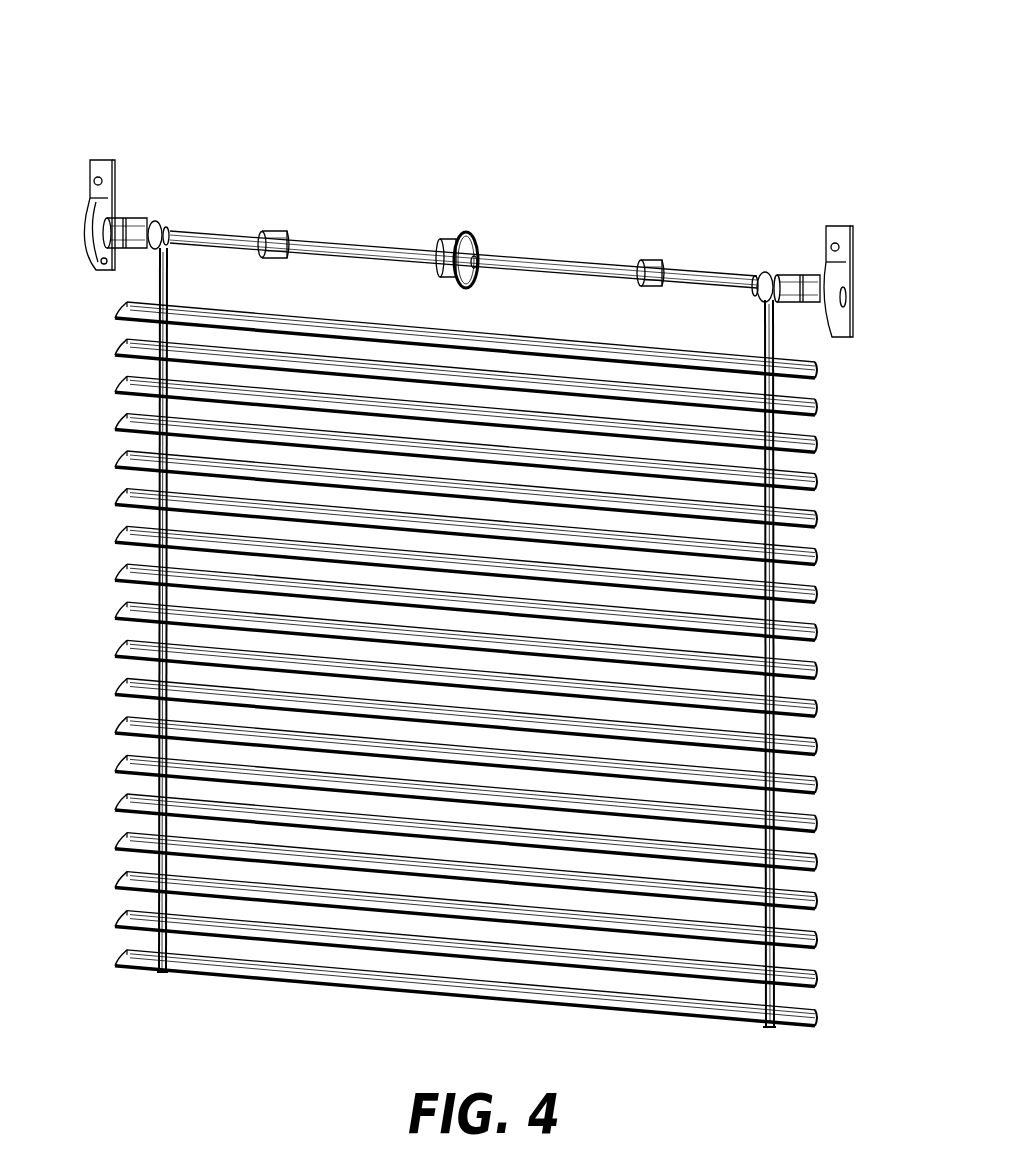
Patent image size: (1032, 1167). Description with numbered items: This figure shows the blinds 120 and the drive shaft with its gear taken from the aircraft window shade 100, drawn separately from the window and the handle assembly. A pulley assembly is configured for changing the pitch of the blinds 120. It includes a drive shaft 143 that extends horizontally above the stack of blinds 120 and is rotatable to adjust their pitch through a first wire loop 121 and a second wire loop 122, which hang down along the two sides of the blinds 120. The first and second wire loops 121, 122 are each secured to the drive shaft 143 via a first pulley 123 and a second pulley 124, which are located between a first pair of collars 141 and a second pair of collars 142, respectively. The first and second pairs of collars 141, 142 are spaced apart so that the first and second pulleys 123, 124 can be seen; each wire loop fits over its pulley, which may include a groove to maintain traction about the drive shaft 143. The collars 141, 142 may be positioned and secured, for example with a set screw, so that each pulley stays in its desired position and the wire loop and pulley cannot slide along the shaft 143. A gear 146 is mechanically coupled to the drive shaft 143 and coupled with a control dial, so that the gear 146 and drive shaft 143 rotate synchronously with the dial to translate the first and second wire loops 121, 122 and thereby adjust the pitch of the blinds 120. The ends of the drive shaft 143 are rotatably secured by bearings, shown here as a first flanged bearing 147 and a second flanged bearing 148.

The aircraft window shade 100 is at (190, 60).
The blinds 120 is at (810, 583).
The first wire loop 121 is at (160, 283).
The second wire loop 122 is at (778, 333).
The first pulley 123 is at (160, 222).
The second pulley 124 is at (755, 275).
The first pair of collars 141 is at (135, 217).
The second pair of collars 142 is at (652, 262).
The drive shaft 143 is at (575, 262).
The gear 146 is at (462, 236).
The first flanged bearing 147 is at (100, 160).
The second flanged bearing 148 is at (848, 228).